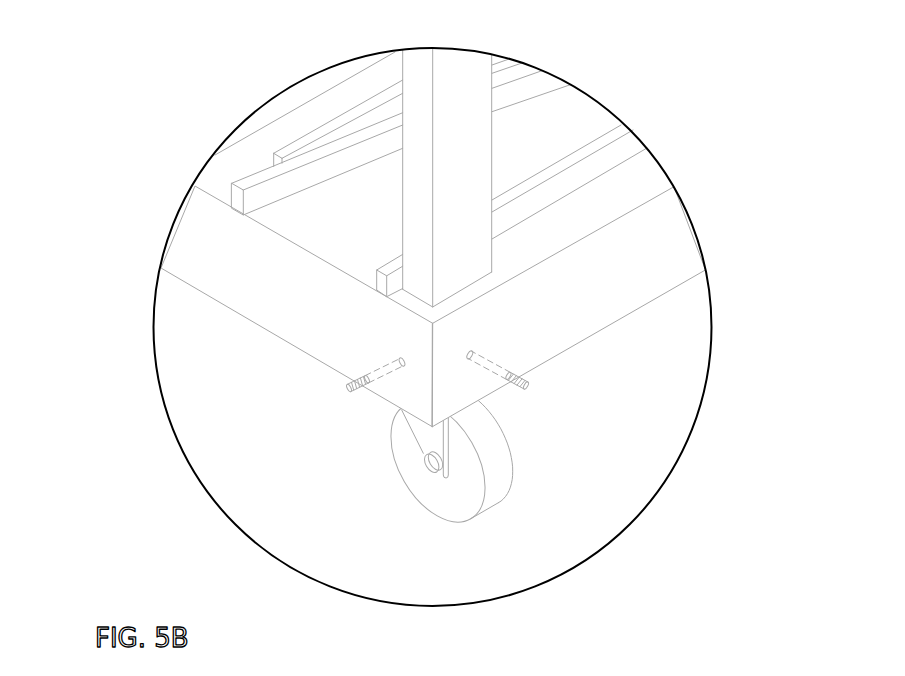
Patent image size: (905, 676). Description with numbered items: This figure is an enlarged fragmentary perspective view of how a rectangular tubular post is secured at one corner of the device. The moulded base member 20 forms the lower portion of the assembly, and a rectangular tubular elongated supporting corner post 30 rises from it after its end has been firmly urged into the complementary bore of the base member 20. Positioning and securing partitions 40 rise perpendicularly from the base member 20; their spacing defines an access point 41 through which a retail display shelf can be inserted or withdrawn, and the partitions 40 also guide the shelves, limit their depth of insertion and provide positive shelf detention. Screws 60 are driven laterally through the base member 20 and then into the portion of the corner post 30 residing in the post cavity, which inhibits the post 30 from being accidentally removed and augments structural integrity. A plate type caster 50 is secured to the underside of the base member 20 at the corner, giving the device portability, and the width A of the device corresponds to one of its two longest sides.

The moulded base member 20 is at (193, 241).
The rectangular tubular elongated supporting corner post 30 is at (470, 116).
The positioning and securing partition 40 is at (240, 180).
The access point 41 is at (221, 294).
The width of the device A is at (239, 374).
The plate type caster 50 is at (579, 462).
The screw 60 is at (414, 403).